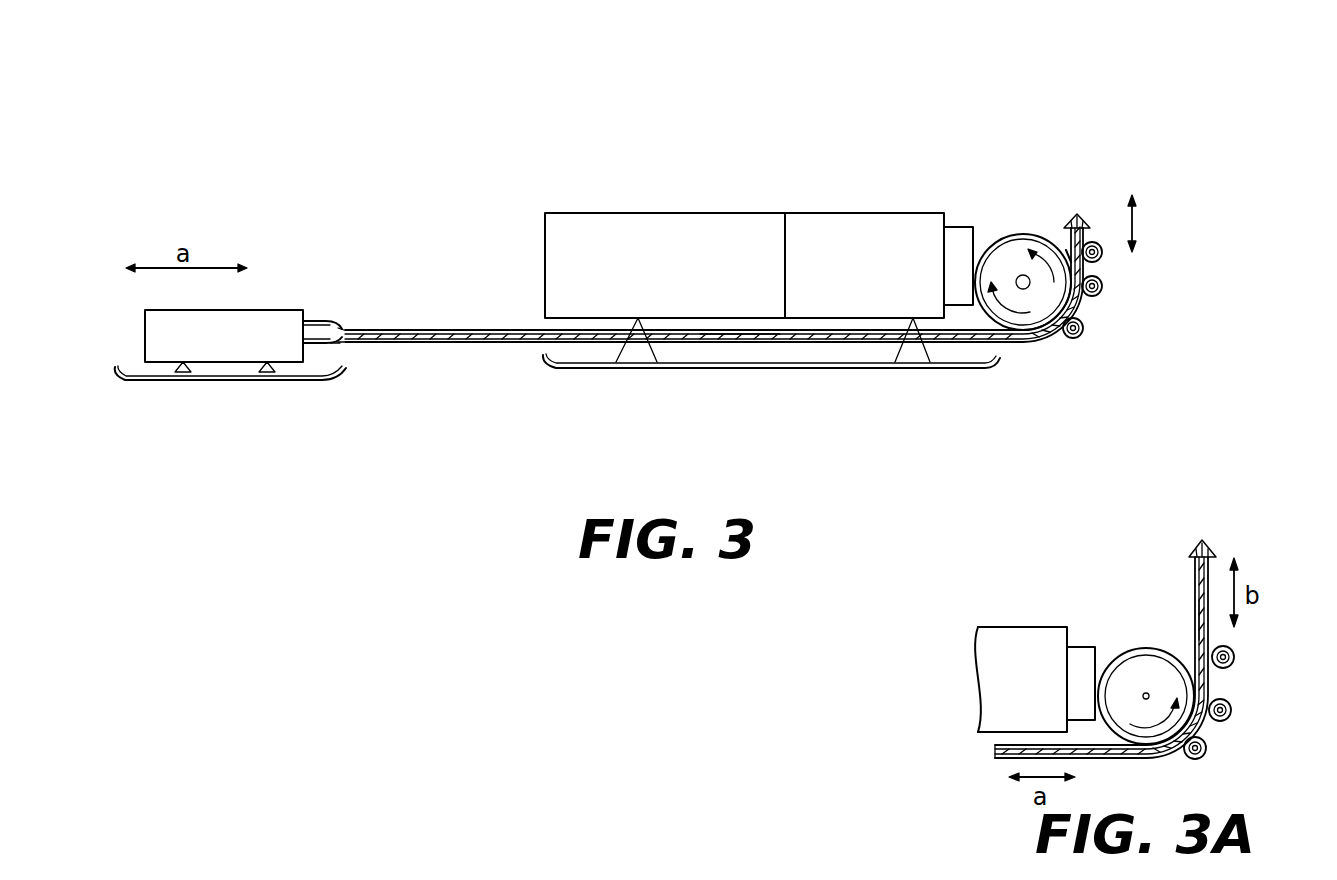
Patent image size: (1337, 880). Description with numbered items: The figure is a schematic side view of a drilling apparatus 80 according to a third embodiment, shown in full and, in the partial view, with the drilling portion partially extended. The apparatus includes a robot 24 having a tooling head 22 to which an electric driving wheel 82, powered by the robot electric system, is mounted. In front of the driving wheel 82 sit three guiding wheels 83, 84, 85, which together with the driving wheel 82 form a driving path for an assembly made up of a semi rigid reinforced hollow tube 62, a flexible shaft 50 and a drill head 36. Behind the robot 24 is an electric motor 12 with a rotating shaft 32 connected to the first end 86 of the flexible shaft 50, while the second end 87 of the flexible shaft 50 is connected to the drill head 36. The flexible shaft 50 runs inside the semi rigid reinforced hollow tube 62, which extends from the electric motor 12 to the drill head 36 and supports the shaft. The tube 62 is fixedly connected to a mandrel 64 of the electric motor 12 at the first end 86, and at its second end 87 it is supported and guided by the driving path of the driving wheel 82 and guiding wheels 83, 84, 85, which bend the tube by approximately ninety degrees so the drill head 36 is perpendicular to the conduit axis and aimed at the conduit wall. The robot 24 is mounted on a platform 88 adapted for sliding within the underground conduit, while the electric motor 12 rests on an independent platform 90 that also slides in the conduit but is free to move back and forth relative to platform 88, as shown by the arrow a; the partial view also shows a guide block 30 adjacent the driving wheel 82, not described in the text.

In FIG. 3, the electric motor 12 is at (268, 318).
In FIG. 3, the tooling head 22 is at (963, 228).
In FIG. 3, the robot 24 is at (746, 222).
In FIG. 3A, the robot 24 is at (1000, 636).
In FIG. 3A, the guide block 30 is at (1081, 655).
In FIG. 3, the rotating shaft 32 is at (313, 332).
In FIG. 3, the drill head 36 is at (1078, 216).
In FIG. 3A, the drill head 36 is at (1212, 545).
In FIG. 3, the flexible shaft 50 is at (783, 344).
In FIG. 3A, the flexible shaft 50 is at (1208, 618).
In FIG. 3, the semi rigid reinforced hollow tube 62 is at (738, 344).
In FIG. 3A, the semi rigid reinforced hollow tube 62 is at (1207, 582).
In FIG. 3, the mandrel 64 is at (330, 343).
In FIG. 3, the drilling apparatus 80 is at (908, 150).
In FIG. 3, the electric driving wheel 82 is at (1017, 236).
In FIG. 3A, the electric driving wheel 82 is at (1134, 668).
In FIG. 3, the guiding wheel 83 is at (1105, 252).
In FIG. 3A, the guiding wheel 83 is at (1235, 656).
In FIG. 3, the guiding wheel 84 is at (1099, 297).
In FIG. 3A, the guiding wheel 84 is at (1232, 708).
In FIG. 3, the guiding wheel 85 is at (1078, 340).
In FIG. 3A, the guiding wheel 85 is at (1207, 757).
In FIG. 3, the first end 86 is at (341, 330).
In FIG. 3, the second end 87 is at (1064, 255).
In FIG. 3, the platform 88 is at (668, 366).
In FIG. 3, the independent platform 90 is at (177, 378).